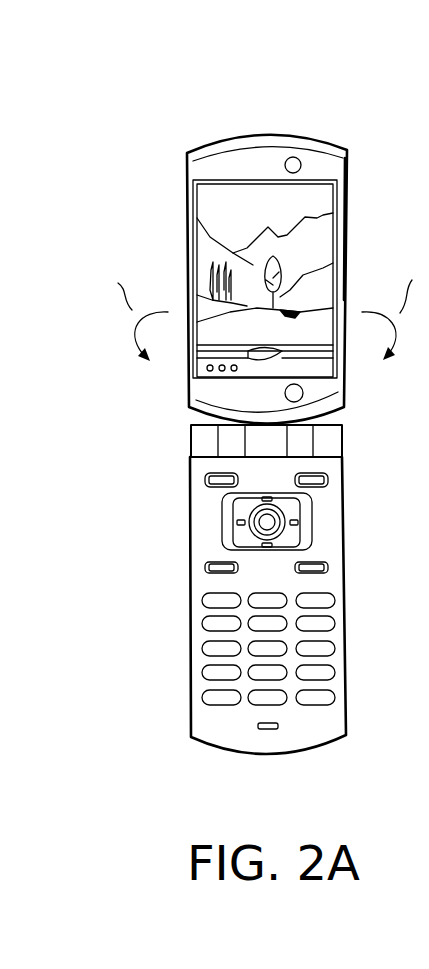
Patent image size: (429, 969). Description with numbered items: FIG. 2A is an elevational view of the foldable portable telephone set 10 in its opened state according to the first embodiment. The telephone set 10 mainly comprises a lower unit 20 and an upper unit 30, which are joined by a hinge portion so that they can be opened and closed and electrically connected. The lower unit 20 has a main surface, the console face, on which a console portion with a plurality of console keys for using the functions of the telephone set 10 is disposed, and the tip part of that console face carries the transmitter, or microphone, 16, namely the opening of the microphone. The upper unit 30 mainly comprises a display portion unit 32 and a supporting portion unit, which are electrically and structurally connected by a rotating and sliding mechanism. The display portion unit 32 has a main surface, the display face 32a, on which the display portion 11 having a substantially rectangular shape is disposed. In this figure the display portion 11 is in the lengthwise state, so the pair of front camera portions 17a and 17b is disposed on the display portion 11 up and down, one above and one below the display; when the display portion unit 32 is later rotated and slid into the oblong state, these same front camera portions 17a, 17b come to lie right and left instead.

The foldable portable telephone set 10 is at (160, 656).
The display portion 11 is at (197, 198).
The transmitter (microphone) 16 is at (268, 729).
The front camera portion 17a is at (301, 158).
The front camera portion 17b is at (305, 388).
The lower unit 20 is at (347, 723).
The upper unit 30 is at (272, 133).
The display portion unit 32 is at (212, 147).
The display face 32a is at (332, 172).